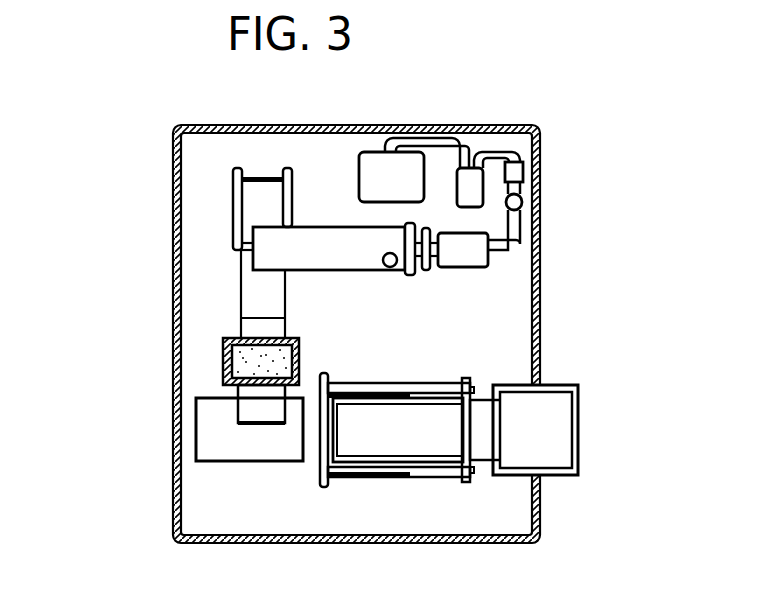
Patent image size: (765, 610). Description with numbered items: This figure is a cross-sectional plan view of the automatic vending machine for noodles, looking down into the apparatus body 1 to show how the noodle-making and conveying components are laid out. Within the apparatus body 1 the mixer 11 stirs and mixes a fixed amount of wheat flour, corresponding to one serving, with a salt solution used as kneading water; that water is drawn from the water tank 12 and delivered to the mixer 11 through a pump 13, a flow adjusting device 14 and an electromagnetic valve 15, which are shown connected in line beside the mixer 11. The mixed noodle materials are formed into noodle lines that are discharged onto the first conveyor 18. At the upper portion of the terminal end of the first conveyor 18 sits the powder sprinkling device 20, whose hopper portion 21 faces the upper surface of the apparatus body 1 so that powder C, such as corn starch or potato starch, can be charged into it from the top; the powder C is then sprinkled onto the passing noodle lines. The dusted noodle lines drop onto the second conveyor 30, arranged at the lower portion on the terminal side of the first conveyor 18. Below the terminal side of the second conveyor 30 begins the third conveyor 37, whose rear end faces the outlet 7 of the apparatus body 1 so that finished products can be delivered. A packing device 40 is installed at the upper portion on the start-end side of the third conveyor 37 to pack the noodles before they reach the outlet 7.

The apparatus body 1 is at (171, 180).
The mixer 11 is at (315, 245).
The water tank 12 is at (373, 160).
The pump 13 is at (473, 182).
The flow adjusting device 14 is at (524, 171).
The electromagnetic valve 15 is at (522, 202).
The first conveyor 18 is at (273, 328).
The powder sprinkling device 20 is at (221, 360).
The hopper portion 21 is at (223, 345).
The powder C is at (247, 370).
The second conveyor 30 is at (207, 425).
The third conveyor 37 is at (438, 445).
The packing device 40 is at (351, 484).
The outlet 7 is at (578, 428).